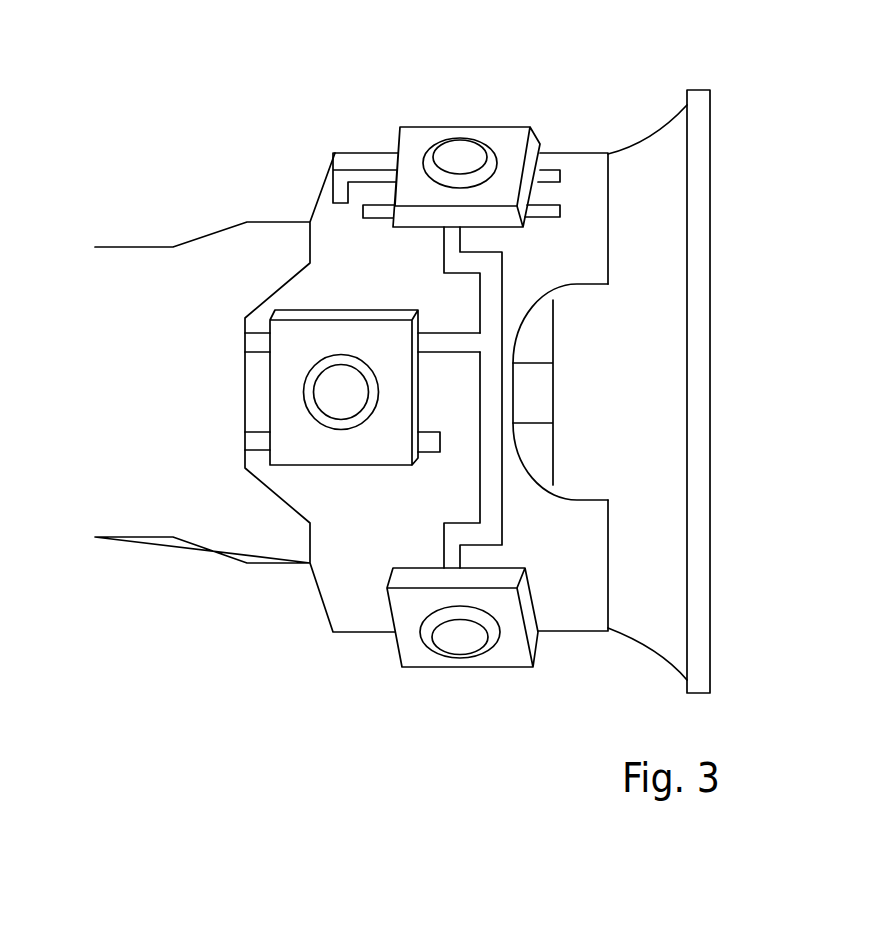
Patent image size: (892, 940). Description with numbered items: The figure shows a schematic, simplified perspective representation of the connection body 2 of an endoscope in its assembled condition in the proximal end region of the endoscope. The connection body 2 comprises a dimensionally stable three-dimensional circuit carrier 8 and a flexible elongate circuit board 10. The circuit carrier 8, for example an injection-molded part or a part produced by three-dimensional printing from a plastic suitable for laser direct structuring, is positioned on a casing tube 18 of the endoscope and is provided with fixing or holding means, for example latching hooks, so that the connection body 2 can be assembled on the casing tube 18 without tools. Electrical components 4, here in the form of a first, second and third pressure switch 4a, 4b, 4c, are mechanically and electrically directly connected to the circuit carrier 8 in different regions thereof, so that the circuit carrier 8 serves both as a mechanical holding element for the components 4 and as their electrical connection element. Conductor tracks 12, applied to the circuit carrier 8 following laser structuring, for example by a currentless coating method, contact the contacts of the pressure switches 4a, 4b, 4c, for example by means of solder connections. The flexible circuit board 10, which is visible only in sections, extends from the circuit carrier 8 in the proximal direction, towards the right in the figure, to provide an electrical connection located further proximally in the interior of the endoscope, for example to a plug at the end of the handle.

The connection body 2 is at (437, 386).
The electrical component 4 is at (388, 403).
The first pressure switch 4a is at (417, 138).
The second pressure switch 4b is at (287, 453).
The third pressure switch 4c is at (415, 660).
The dimensionally stable three-dimensional circuit carrier 8 is at (585, 177).
The flexible elongate circuit board 10 is at (535, 381).
The conductor tracks 12 is at (340, 180).
The casing tube 18 is at (225, 247).